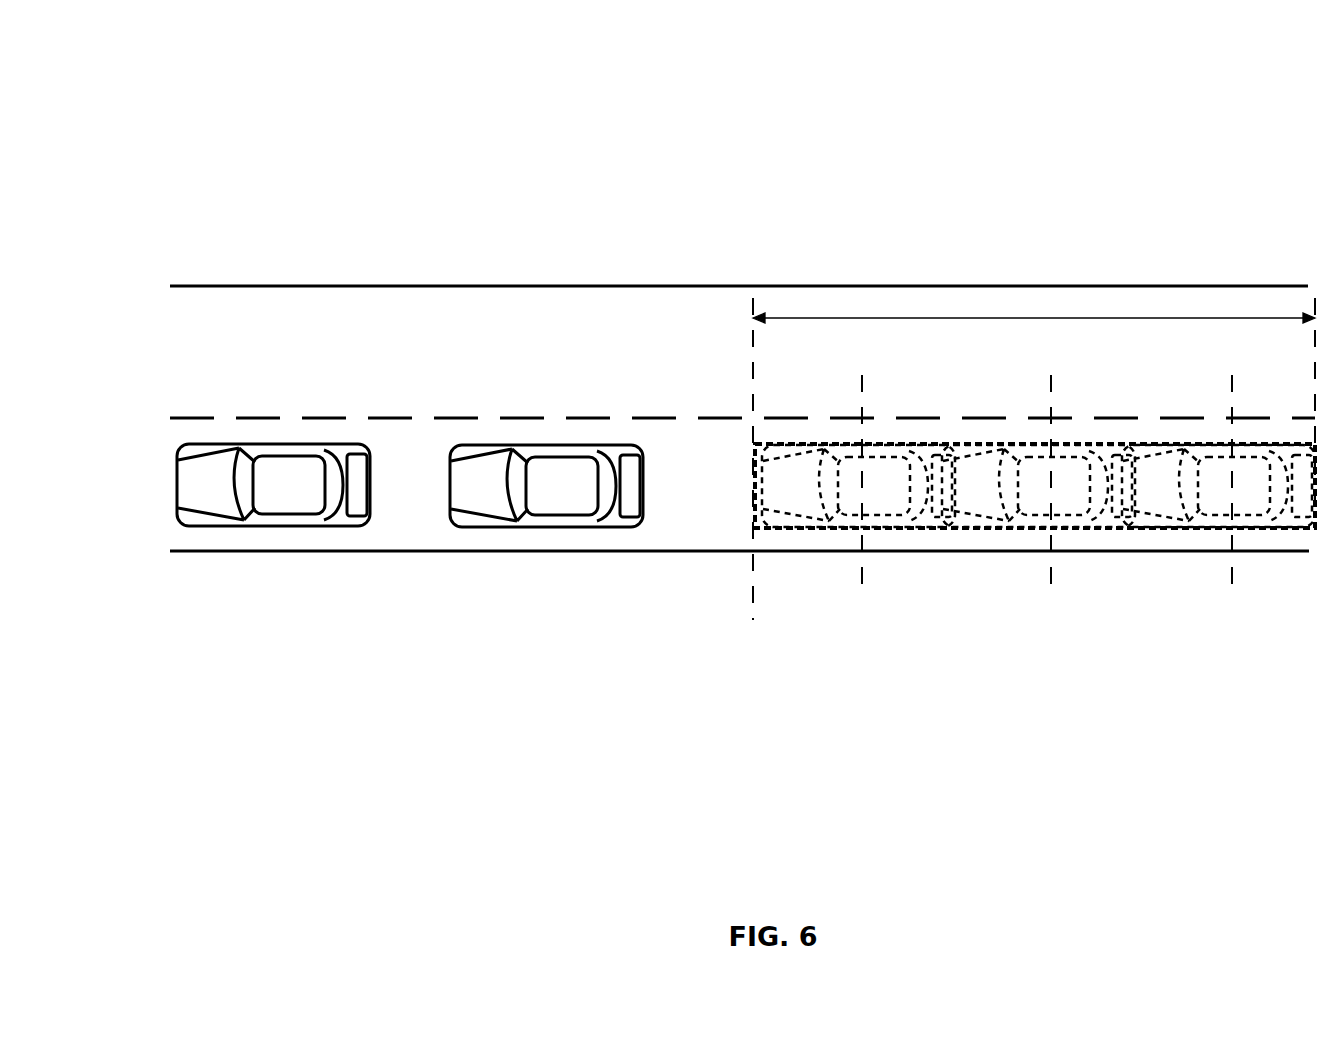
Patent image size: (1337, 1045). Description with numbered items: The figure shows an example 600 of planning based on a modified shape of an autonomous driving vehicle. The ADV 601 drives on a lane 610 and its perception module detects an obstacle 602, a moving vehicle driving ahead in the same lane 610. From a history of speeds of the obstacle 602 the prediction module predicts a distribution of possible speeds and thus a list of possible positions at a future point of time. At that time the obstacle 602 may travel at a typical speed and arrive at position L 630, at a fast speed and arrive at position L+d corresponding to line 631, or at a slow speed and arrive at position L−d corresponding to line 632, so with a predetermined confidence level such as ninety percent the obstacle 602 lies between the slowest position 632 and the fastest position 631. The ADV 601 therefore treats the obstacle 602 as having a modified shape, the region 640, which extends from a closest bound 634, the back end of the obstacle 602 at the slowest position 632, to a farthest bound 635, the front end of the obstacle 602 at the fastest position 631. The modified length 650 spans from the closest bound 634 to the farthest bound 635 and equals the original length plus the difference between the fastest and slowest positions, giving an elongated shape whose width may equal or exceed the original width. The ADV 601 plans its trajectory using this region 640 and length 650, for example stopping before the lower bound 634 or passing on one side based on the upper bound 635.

The driving scenario 600 is at (752, 343).
The autonomous driving vehicle 601 is at (268, 496).
The obstacle 602 is at (544, 496).
The lane 610 is at (403, 524).
The estimated position line L 630 is at (1055, 517).
The line 631 is at (1222, 517).
The line 632 is at (862, 517).
The closest bound 634 is at (765, 471).
The farthest bound 635 is at (1315, 465).
The region 640 is at (1113, 440).
The modified length 650 is at (1034, 308).